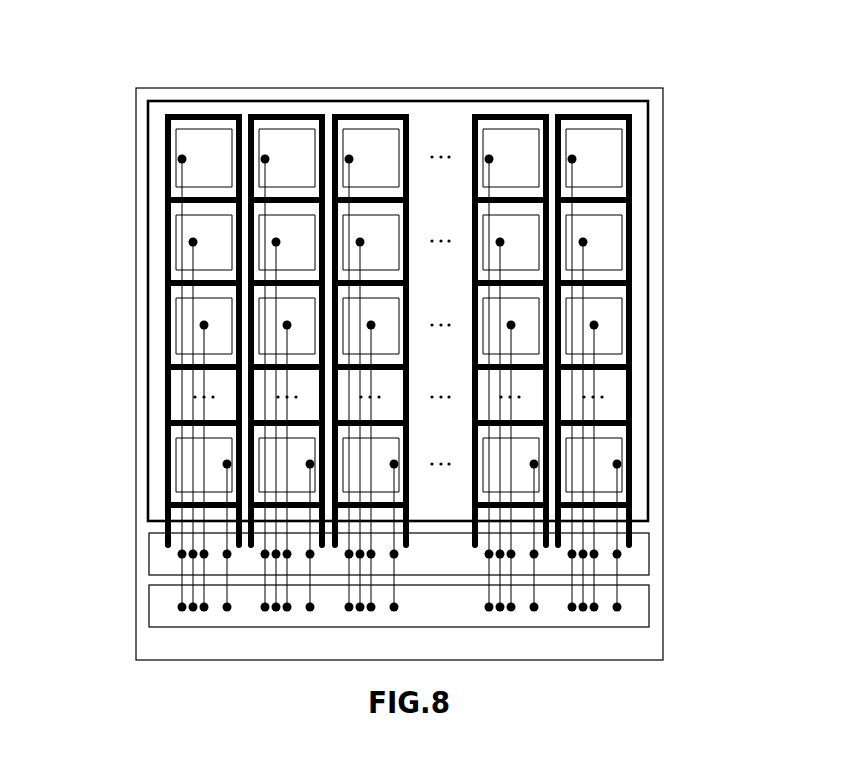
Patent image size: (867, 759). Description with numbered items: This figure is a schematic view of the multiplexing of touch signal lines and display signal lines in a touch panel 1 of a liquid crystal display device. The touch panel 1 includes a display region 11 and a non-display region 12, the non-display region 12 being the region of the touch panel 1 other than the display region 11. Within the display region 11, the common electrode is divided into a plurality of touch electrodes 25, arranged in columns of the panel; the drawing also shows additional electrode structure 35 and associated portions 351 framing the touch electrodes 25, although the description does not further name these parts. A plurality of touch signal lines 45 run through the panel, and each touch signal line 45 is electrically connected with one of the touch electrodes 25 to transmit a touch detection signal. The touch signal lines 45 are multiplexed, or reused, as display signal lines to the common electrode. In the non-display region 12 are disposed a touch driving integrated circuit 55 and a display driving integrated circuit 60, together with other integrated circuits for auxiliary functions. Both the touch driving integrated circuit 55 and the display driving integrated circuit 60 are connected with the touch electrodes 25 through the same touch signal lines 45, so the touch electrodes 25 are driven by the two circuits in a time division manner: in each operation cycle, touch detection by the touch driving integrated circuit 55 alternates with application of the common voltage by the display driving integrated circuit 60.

The touch panel 1 is at (667, 330).
The display region 11 is at (650, 423).
The non-display region 12 is at (657, 547).
The display driving integrated circuit 60 is at (650, 602).
The touch electrode 35 is at (193, 118).
The electrode connecting segment 351 is at (512, 112).
The touch electrode 25 is at (377, 113).
The touch signal line 45 is at (180, 393).
The touch driving integrated circuit 55 is at (148, 572).